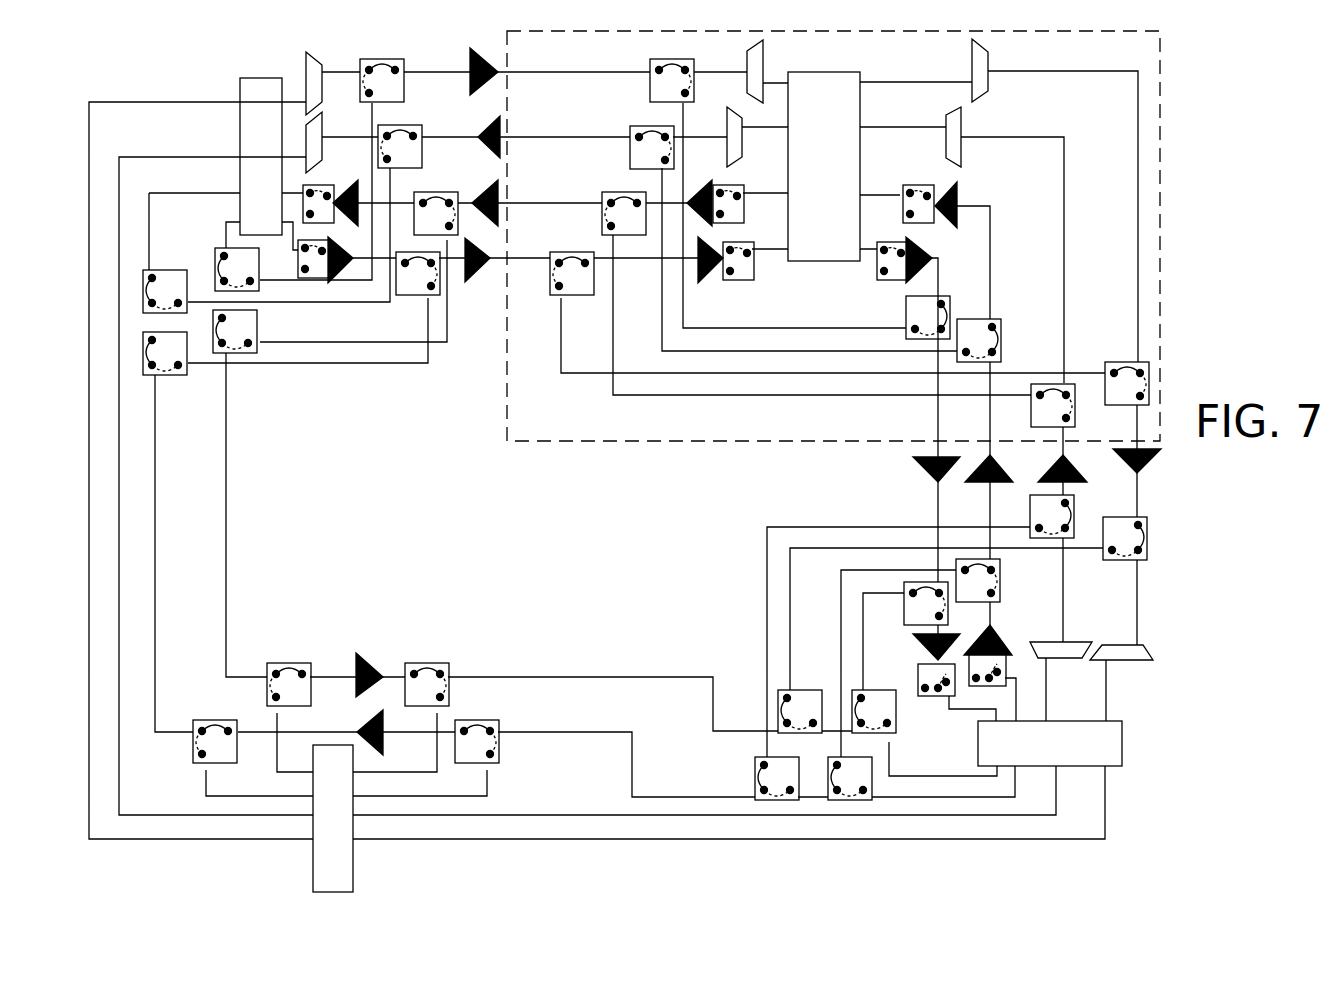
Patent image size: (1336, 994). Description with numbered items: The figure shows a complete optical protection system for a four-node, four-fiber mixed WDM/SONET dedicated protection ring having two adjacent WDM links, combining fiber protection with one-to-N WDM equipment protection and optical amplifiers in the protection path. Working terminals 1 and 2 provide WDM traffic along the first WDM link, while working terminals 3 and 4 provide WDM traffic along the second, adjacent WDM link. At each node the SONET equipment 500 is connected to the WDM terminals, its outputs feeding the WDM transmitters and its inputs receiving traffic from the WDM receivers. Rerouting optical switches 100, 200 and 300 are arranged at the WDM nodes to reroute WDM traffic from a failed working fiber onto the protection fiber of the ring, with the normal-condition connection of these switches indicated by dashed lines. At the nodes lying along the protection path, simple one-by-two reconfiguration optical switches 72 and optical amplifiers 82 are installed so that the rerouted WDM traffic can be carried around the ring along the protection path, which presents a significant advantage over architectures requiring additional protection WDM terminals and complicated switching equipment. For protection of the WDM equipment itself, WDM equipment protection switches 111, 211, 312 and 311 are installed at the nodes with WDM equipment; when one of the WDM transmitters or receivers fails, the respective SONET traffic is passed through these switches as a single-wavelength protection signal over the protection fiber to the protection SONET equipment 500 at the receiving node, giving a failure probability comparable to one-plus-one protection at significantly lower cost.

The working terminal 1 is at (314, 112).
The working terminal 2 is at (745, 103).
The working terminal 3 is at (967, 103).
The working terminal 4 is at (1091, 651).
The reconfiguration optical switch 72 is at (572, 496).
The optical amplifier 82 is at (368, 697).
The rerouting optical switch 100 is at (282, 186).
The WDM equipment protection switch 111 is at (313, 242).
The rerouting optical switch 200 is at (889, 243).
The WDM equipment protection switch 211 is at (750, 239).
The rerouting optical switch 300 is at (951, 647).
The WDM equipment protection switch 311 is at (957, 686).
The WDM equipment protection switch 312 is at (888, 239).
The SONET equipment 500 is at (681, 482).